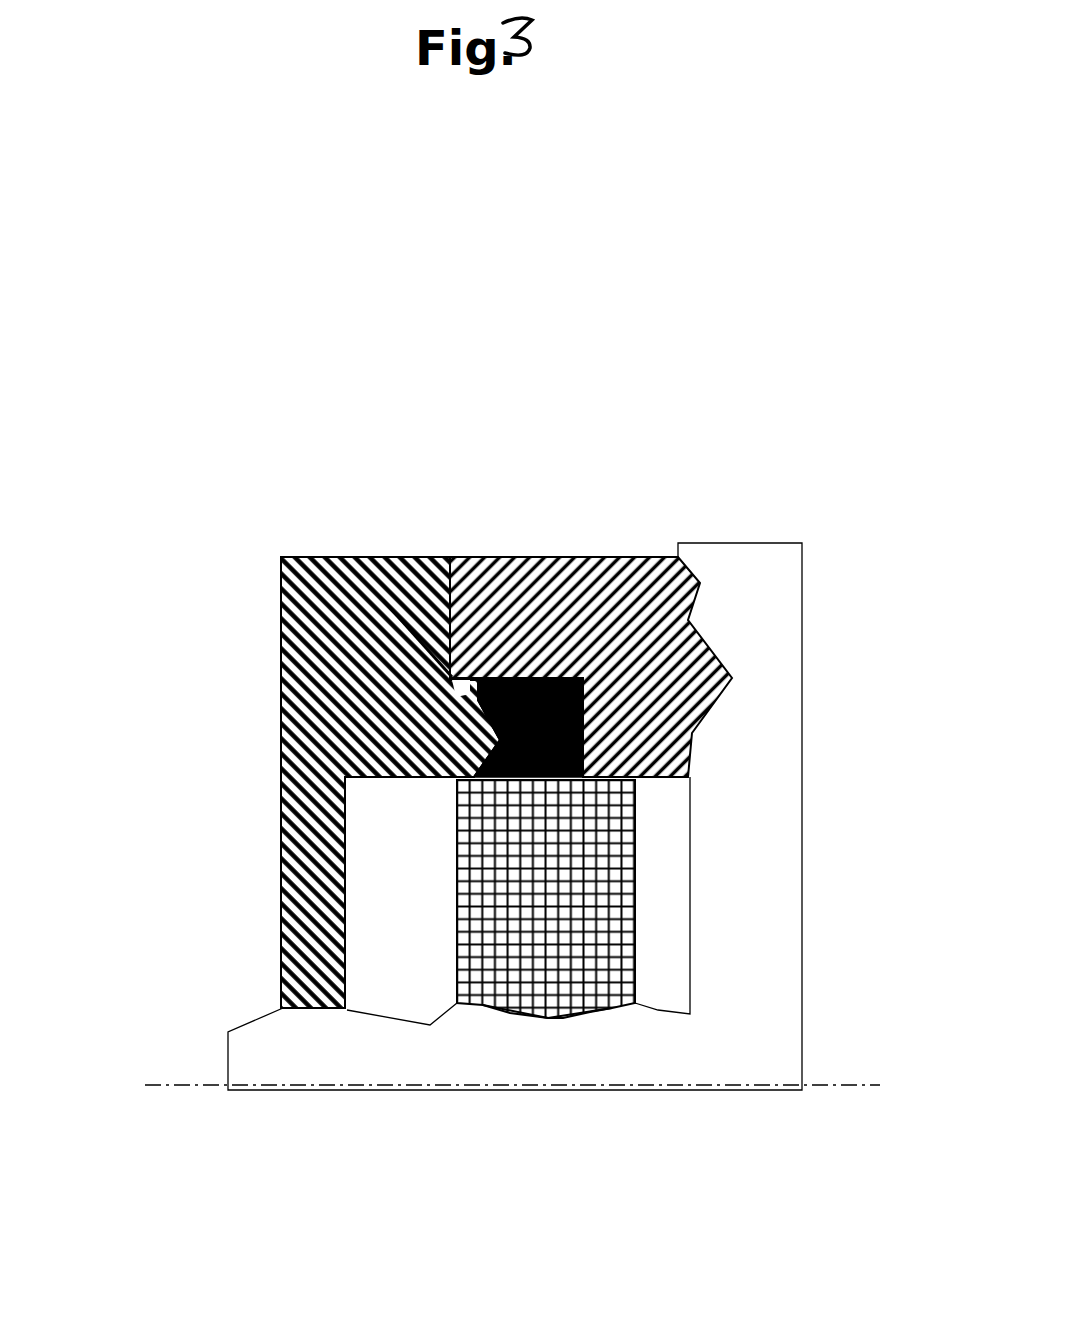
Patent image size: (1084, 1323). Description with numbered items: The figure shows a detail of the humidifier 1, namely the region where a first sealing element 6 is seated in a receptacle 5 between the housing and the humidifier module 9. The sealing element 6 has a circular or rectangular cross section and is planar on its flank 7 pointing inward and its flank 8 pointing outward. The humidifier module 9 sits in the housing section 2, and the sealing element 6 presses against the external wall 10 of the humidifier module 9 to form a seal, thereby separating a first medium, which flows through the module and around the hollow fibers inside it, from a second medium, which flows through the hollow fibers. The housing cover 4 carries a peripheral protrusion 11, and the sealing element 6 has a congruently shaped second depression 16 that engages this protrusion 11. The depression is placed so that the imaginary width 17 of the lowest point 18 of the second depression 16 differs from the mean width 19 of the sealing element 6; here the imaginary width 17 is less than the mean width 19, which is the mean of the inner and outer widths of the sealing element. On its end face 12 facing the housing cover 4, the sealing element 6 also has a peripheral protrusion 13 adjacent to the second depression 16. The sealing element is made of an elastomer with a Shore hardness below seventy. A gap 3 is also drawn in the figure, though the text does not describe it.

The humidifier 1 is at (168, 563).
The housing section 2 is at (687, 620).
The gap 3 is at (450, 677).
The housing cover 4 is at (285, 820).
The receptacle 5 is at (583, 728).
The first sealing element 6 is at (612, 583).
The flank pointing inward 7 is at (492, 782).
The flank pointing outward 8 is at (543, 672).
The humidifier module 9 is at (575, 918).
The external wall 10 is at (640, 778).
The peripheral protrusion 11 is at (350, 560).
The end face 12 is at (440, 625).
The peripheral protrusion 13 is at (486, 677).
The second depression 16 is at (492, 728).
The imaginary width 17 is at (548, 782).
The lowest point 18 is at (510, 782).
The mean width 19 is at (578, 782).